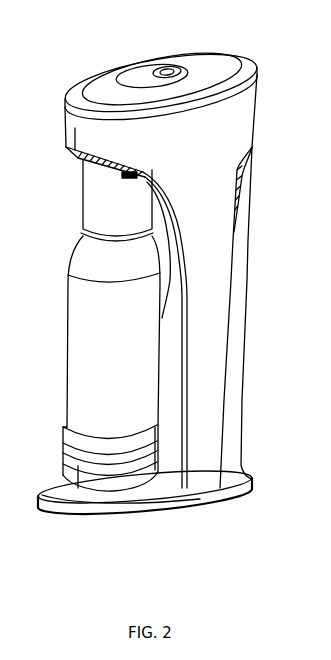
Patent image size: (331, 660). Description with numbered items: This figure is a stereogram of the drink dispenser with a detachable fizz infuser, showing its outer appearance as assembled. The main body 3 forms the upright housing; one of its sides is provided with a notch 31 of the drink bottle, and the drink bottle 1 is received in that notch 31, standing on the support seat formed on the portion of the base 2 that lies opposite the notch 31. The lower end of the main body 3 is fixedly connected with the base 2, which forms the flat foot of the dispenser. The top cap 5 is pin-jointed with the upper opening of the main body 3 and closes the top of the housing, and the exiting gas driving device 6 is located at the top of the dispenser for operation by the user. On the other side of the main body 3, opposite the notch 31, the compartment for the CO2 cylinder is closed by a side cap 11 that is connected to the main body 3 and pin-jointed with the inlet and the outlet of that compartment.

The drink bottle 1 is at (83, 395).
The base 2 is at (165, 512).
The main body 3 is at (233, 124).
The top cap 5 is at (218, 70).
The exiting gas driving device 6 is at (132, 73).
The side cap 11 is at (243, 410).
The notch of the drink bottle 31 is at (162, 367).